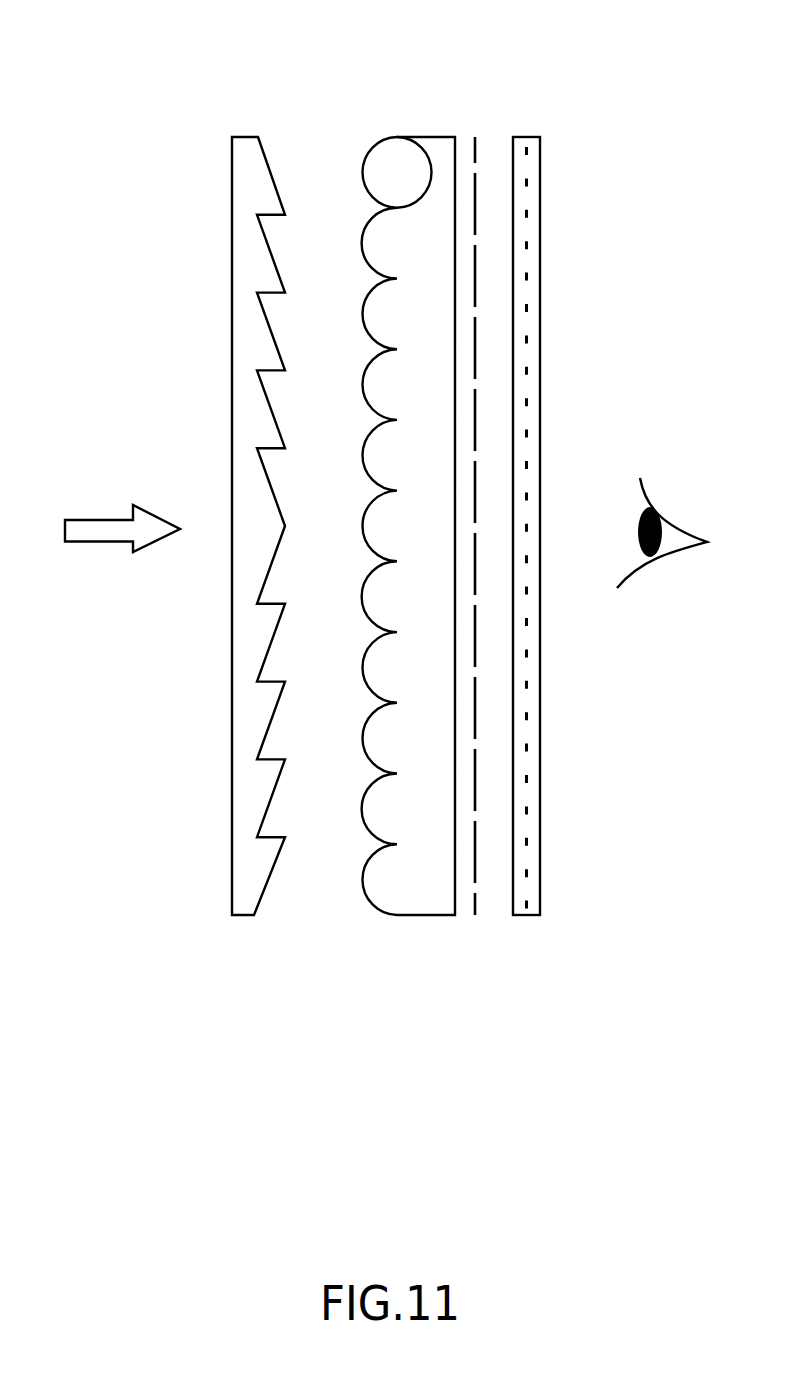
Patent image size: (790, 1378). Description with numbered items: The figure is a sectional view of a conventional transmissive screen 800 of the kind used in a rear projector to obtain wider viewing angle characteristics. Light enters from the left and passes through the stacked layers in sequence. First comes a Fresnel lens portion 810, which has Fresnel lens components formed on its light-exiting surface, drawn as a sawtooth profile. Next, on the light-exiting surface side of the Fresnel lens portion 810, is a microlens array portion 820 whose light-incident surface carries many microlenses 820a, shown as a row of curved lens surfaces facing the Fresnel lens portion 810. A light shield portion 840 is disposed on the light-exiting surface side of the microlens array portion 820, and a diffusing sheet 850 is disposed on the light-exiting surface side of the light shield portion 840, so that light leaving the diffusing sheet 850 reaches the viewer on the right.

The transmissive screen 800 is at (152, 151).
The Fresnel lens portion 810 is at (253, 137).
The microlens array portion 820 is at (405, 137).
The microlens 820a is at (362, 170).
The light shield portion 840 is at (476, 137).
The diffusing sheet 850 is at (535, 137).